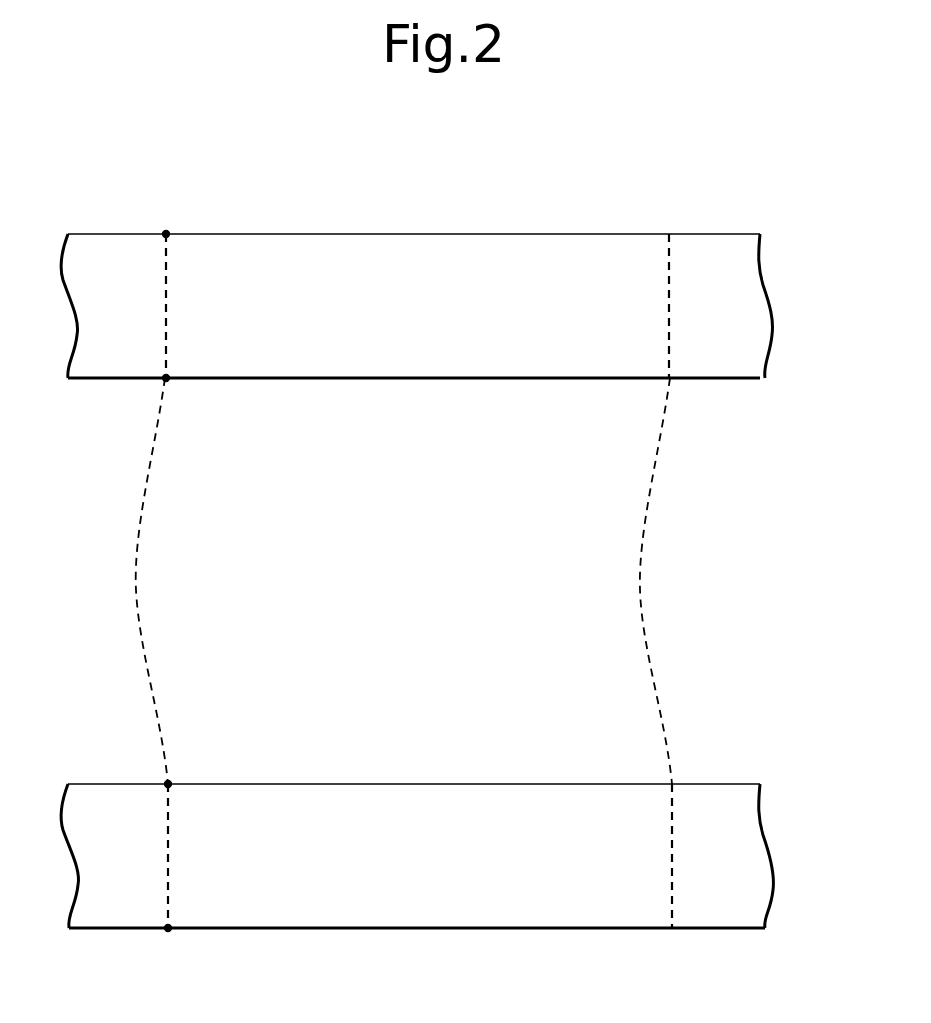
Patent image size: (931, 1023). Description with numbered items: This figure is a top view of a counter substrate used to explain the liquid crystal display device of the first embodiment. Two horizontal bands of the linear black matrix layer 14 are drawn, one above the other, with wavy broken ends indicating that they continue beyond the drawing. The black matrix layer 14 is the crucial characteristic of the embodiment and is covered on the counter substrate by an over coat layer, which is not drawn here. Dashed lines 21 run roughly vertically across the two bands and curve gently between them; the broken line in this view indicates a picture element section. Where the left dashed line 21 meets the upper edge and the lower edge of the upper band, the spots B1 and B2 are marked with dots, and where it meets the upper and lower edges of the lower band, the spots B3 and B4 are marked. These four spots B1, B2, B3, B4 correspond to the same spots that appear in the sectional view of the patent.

The black matrix layer 14 is at (622, 234).
The cutting line 21 is at (158, 441).
The spot B1 is at (168, 233).
The spot B2 is at (168, 380).
The spot B3 is at (170, 783).
The spot B4 is at (168, 930).